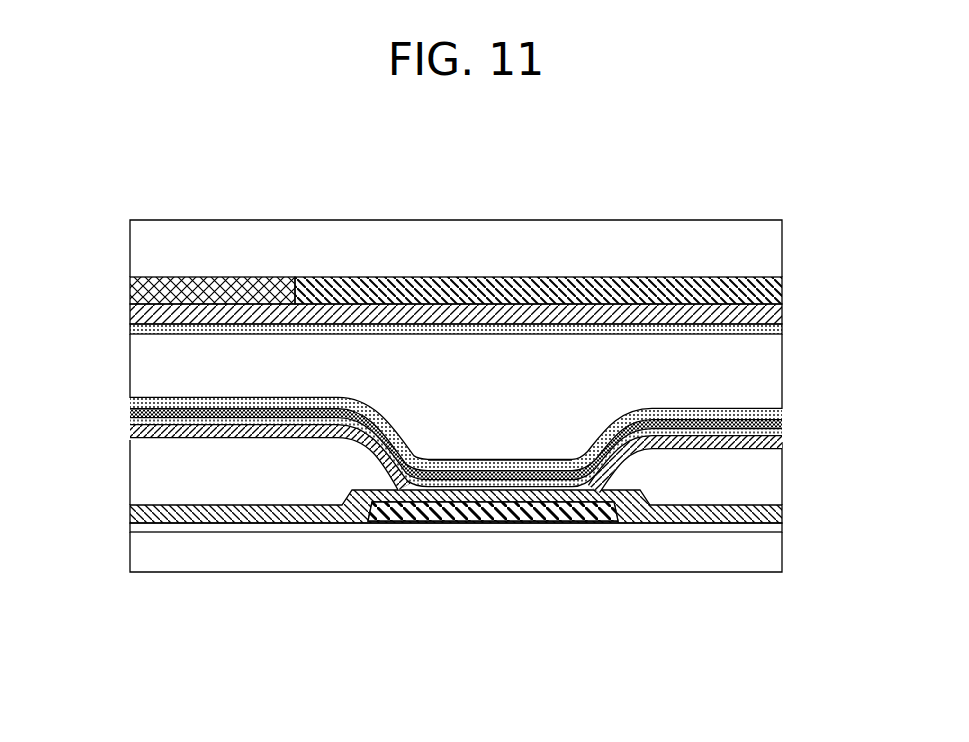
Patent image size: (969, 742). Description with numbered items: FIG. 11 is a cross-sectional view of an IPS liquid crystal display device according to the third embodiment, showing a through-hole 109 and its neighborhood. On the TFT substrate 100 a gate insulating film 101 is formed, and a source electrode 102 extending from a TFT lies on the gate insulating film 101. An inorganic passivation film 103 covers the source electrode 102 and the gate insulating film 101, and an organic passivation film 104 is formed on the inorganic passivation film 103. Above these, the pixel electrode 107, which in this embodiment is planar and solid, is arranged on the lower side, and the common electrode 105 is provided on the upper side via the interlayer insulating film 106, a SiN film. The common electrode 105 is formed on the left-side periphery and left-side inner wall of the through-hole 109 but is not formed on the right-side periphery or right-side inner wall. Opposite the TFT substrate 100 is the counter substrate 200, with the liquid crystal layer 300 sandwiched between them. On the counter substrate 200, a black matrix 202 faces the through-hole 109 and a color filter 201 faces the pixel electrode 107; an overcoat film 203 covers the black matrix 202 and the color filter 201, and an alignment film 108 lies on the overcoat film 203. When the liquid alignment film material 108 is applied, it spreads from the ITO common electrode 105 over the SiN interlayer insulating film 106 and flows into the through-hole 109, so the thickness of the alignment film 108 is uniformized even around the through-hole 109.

The TFT substrate 100 is at (738, 573).
The gate insulating film 101 is at (753, 525).
The source electrode 102 is at (573, 532).
The inorganic passivation film 103 is at (135, 515).
The organic passivation film 104 is at (155, 480).
The common electrode 105 is at (130, 410).
The interlayer insulating film 106 is at (130, 432).
The pixel electrode 107 is at (150, 440).
The alignment film 108 is at (763, 333).
The through-hole 109 is at (487, 440).
The counter substrate 200 is at (764, 250).
The color filter 201 is at (240, 277).
The black matrix 202 is at (537, 277).
The overcoat film 203 is at (762, 316).
The liquid crystal layer 300 is at (765, 378).